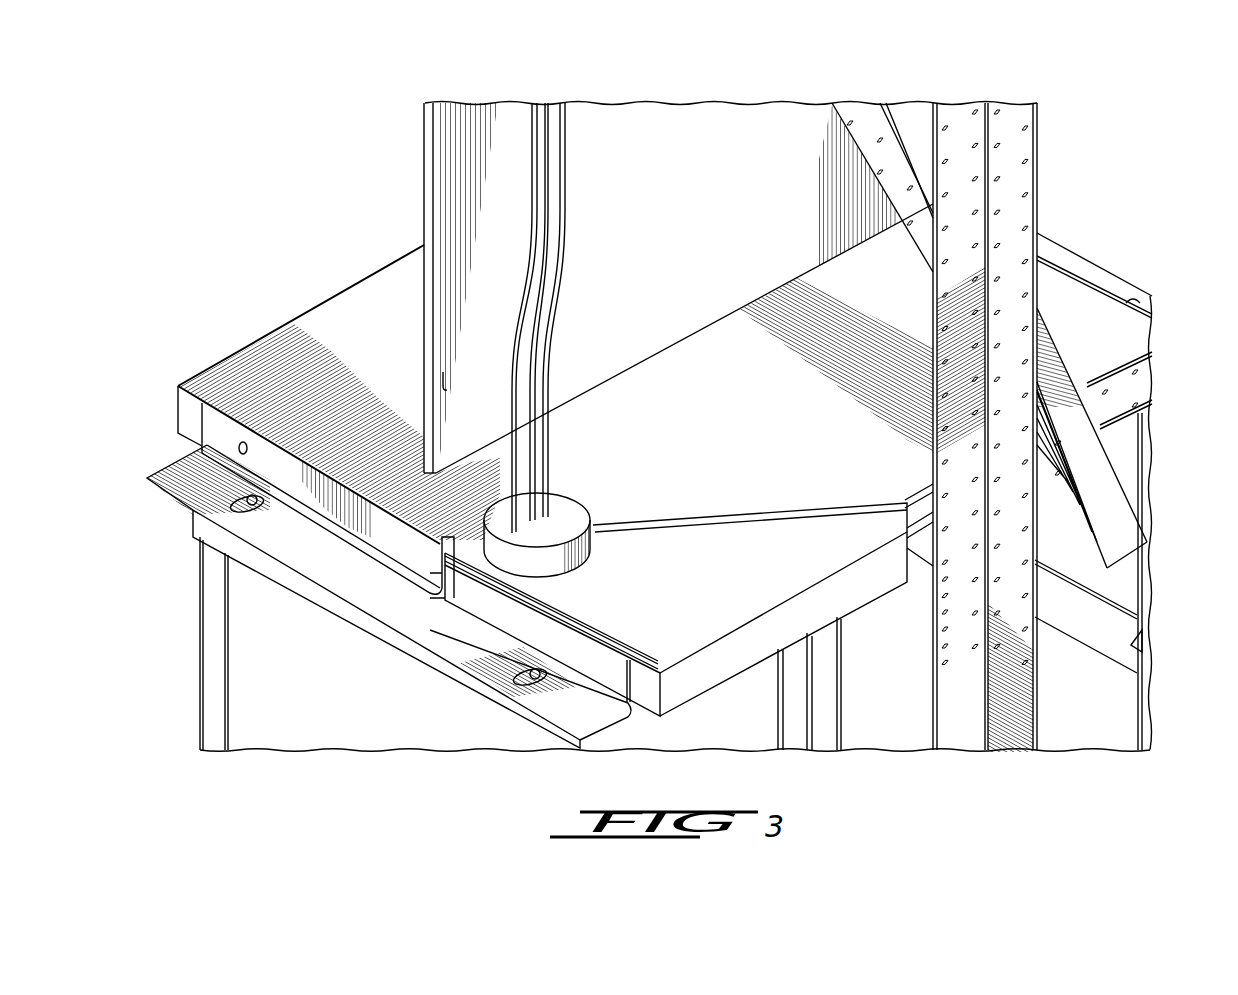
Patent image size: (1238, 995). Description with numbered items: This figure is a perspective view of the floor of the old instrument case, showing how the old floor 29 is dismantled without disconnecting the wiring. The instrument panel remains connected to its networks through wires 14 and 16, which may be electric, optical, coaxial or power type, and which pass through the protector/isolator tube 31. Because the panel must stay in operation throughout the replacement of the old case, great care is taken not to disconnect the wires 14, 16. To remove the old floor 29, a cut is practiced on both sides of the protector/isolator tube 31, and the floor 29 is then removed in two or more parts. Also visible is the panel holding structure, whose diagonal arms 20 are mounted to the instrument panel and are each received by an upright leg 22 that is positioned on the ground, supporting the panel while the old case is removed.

The wire 14 is at (538, 188).
The wire 16 is at (558, 177).
The diagonal arm 20 is at (1063, 375).
The upright leg 22 is at (1013, 580).
The old floor 29 is at (265, 363).
The protector/isolator tube 31 is at (545, 562).